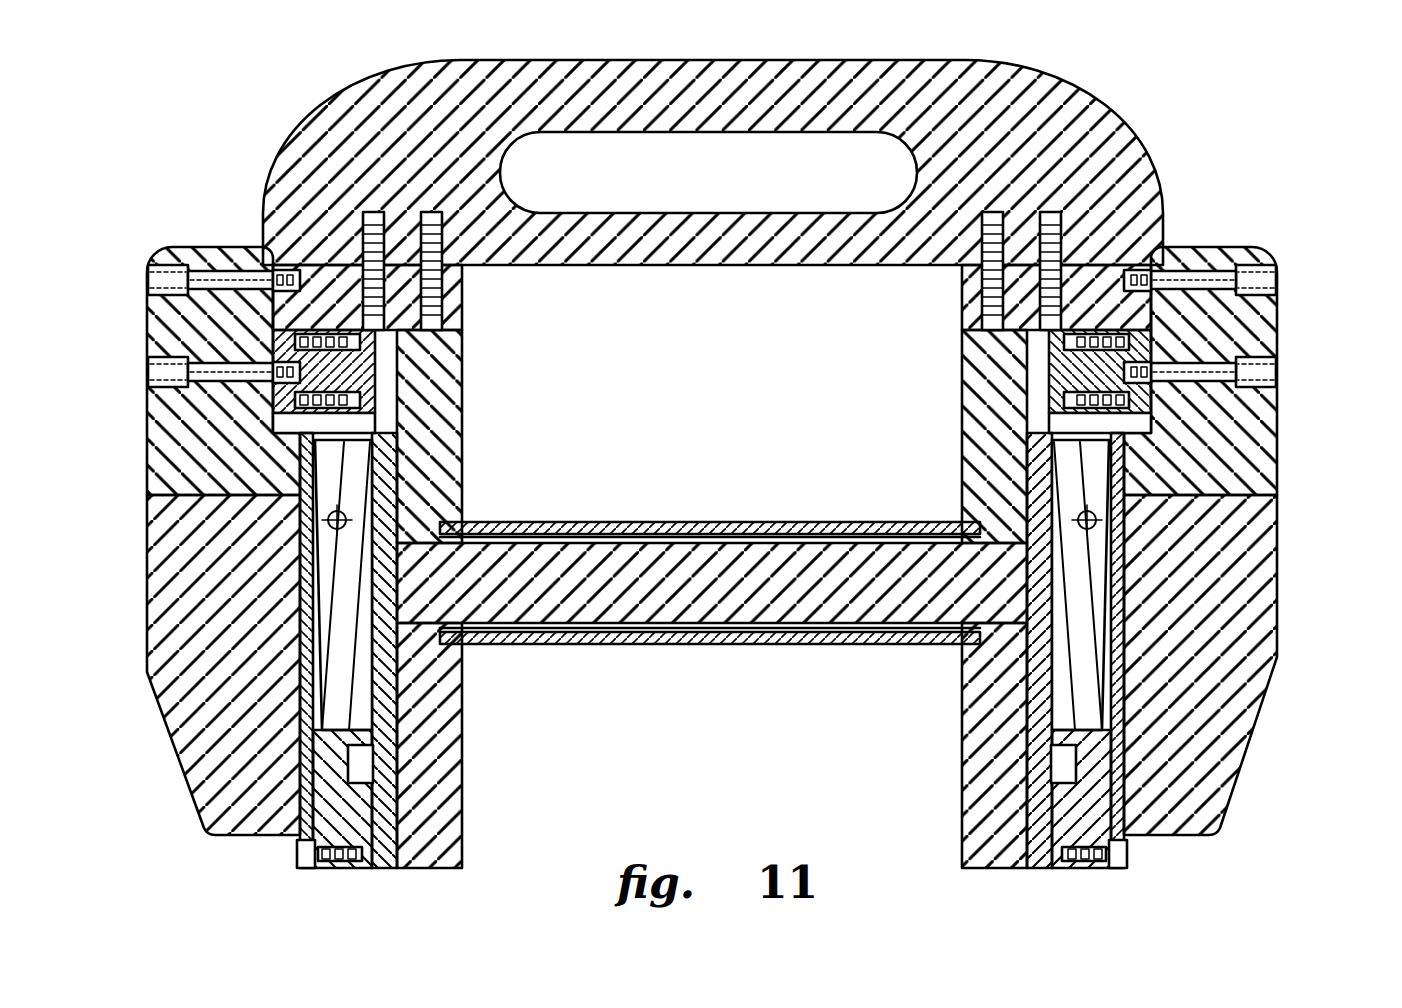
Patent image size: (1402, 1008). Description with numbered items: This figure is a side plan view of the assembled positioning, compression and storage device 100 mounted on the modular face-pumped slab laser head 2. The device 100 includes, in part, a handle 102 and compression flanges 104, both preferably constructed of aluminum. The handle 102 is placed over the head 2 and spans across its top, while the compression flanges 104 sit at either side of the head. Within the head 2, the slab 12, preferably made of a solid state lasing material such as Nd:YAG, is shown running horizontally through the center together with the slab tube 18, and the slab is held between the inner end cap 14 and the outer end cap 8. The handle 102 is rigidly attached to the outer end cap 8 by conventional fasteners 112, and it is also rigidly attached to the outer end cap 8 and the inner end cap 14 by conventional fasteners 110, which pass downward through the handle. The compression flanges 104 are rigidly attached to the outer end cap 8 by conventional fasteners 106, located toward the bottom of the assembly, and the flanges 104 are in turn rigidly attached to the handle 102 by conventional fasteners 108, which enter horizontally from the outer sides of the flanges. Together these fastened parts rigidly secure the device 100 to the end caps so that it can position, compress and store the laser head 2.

The modular face-pumped slab laser head 2 is at (712, 584).
The outer end cap 8 is at (1040, 837).
The slab 12 is at (660, 580).
The inner end cap 14 is at (453, 793).
The slab tube 18 is at (828, 522).
The positioning, compression and storage device 100 is at (708, 490).
The handle 102 is at (457, 143).
The compression flanges 104 is at (252, 640).
The fasteners 106 is at (1133, 850).
The fasteners 108 is at (157, 288).
The fasteners 110 is at (365, 225).
The fasteners 112 is at (280, 395).